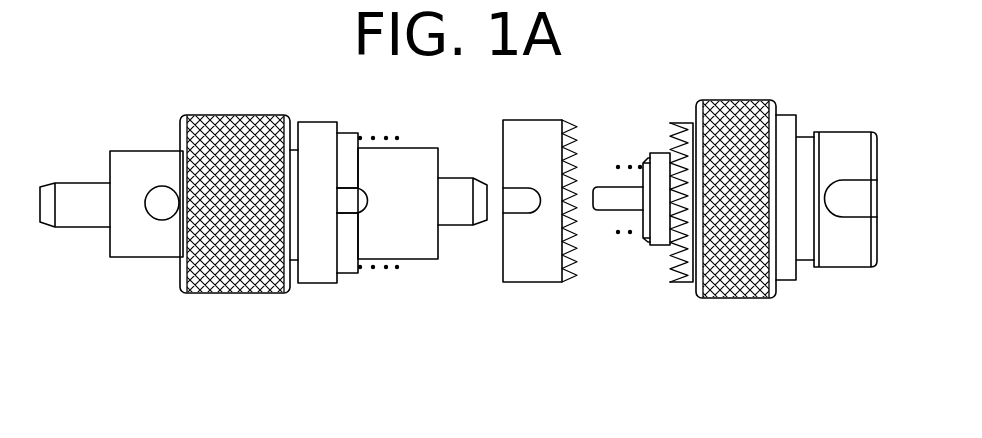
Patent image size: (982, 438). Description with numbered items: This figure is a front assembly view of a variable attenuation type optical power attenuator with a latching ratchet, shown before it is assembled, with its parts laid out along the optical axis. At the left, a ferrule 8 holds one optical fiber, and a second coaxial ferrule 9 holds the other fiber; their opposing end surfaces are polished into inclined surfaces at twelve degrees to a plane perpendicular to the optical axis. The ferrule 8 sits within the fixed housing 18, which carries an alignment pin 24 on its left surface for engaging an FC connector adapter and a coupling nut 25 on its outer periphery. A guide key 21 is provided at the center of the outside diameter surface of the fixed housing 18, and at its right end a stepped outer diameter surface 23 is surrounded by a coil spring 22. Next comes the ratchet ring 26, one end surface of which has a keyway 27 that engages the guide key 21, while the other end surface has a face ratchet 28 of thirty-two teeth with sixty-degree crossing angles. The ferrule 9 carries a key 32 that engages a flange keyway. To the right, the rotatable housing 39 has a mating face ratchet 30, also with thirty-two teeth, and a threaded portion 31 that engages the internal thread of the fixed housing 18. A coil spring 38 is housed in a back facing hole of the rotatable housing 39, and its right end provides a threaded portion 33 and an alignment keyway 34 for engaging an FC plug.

The ferrule 8 is at (73, 190).
The ferrule 9 is at (457, 208).
The fixed housing 18 is at (132, 155).
The guide key 21 is at (353, 203).
The coil spring 22 is at (395, 270).
The stepped outer diameter surface 23 is at (413, 240).
The alignment pin 24 is at (162, 213).
The coupling nut 25 is at (232, 122).
The ratchet ring 26 is at (532, 128).
The keyway 27 is at (518, 193).
The face ratchet 28 is at (575, 128).
The face ratchet 30 is at (675, 267).
The threaded portion 31 is at (655, 153).
The key 32 is at (607, 202).
The threaded portion 33 is at (850, 130).
The keyway 34 is at (849, 210).
The coil spring 38 is at (628, 166).
The rotatable housing 39 is at (730, 105).